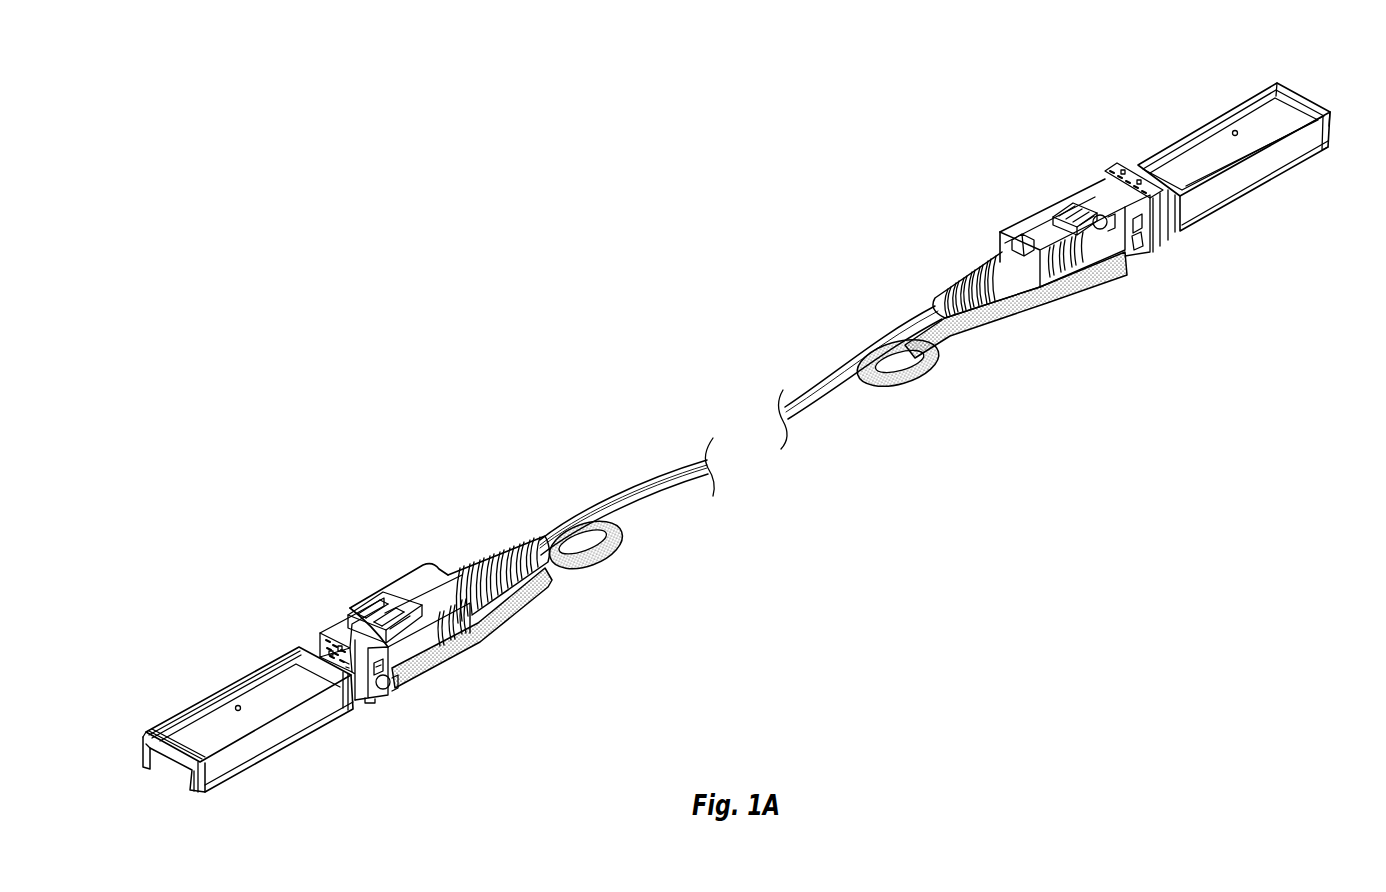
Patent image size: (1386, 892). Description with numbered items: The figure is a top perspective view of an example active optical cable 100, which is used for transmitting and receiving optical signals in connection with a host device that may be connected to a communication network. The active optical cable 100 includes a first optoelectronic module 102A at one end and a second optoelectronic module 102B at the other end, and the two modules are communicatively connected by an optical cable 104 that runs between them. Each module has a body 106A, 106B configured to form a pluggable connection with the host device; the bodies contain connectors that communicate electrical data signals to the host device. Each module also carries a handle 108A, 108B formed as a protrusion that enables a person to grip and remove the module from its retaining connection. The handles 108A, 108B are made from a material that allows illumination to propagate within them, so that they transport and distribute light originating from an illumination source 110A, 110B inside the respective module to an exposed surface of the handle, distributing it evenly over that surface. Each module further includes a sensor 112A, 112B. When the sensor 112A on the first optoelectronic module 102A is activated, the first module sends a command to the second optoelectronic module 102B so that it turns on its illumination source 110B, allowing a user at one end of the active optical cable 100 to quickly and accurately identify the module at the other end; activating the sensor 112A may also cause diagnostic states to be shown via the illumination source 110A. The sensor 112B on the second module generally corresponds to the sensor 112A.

The active optical cable 100 is at (296, 226).
The first optoelectronic module 102A is at (372, 573).
The second optoelectronic module 102B is at (994, 188).
The optical cable 104 is at (822, 378).
The body 106A is at (214, 706).
The body 106B is at (1248, 106).
The handle 108A is at (600, 563).
The handle 108B is at (970, 335).
The illumination source 110A is at (396, 686).
The illumination source 110B is at (1100, 216).
The sensor 112A is at (325, 638).
The sensor 112B is at (1150, 247).